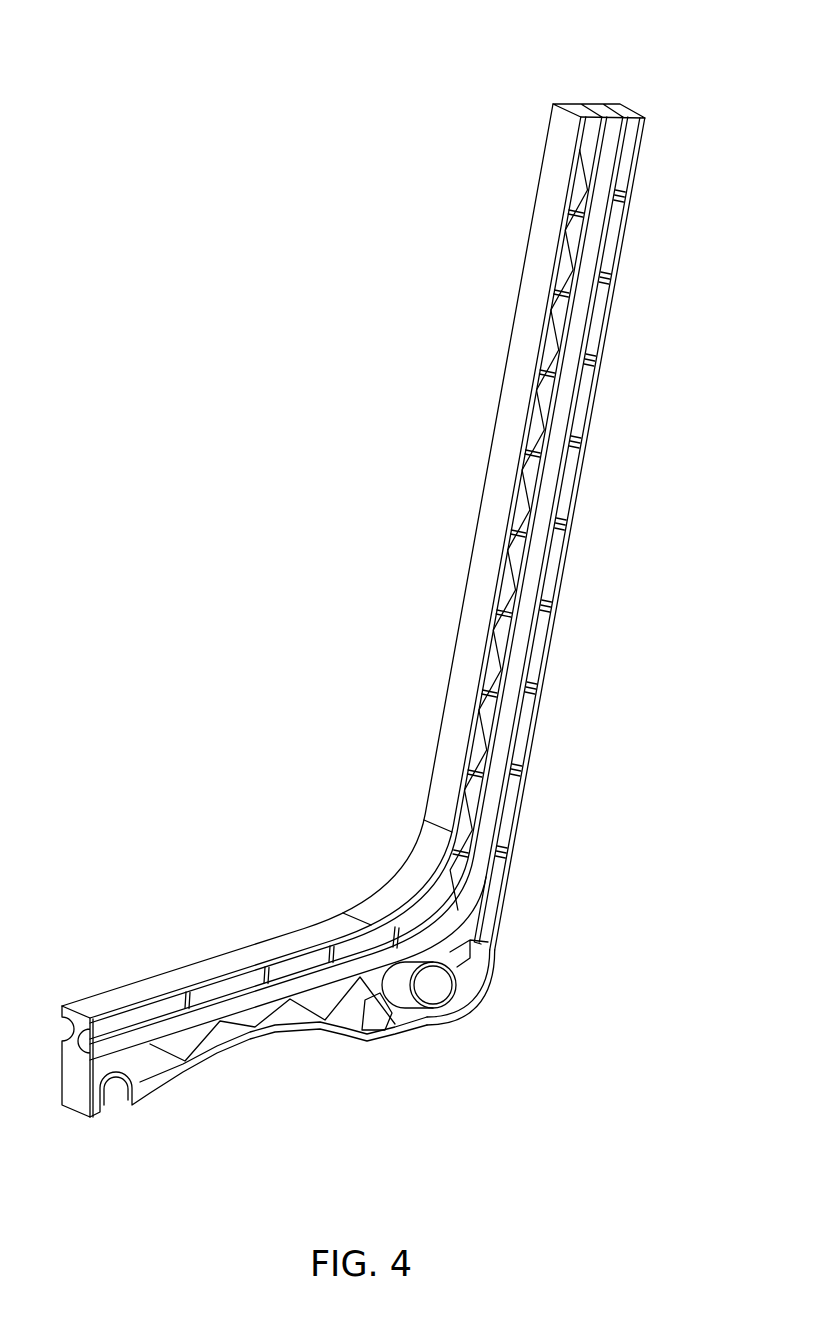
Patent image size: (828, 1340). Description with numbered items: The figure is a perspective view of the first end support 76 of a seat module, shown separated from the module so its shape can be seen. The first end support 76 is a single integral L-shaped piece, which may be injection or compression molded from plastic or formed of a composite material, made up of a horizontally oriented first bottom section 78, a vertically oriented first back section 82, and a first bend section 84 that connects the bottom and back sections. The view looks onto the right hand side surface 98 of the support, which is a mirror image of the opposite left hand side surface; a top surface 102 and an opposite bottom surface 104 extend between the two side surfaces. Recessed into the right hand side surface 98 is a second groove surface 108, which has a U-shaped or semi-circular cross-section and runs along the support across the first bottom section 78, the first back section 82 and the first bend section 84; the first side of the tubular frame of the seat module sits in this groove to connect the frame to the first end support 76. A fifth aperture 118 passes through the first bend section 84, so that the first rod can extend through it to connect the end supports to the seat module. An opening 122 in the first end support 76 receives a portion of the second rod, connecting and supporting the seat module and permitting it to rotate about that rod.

The first end support 76 is at (631, 100).
The first bottom section 78 is at (236, 1072).
The first back section 82 is at (586, 516).
The first bend section 84 is at (485, 1010).
The right hand side surface 98 is at (590, 433).
The top surface 102 is at (300, 946).
The bottom surface 104 is at (545, 690).
The second groove surface 108 is at (549, 462).
The fifth aperture 118 is at (435, 1022).
The opening 122 is at (116, 1119).